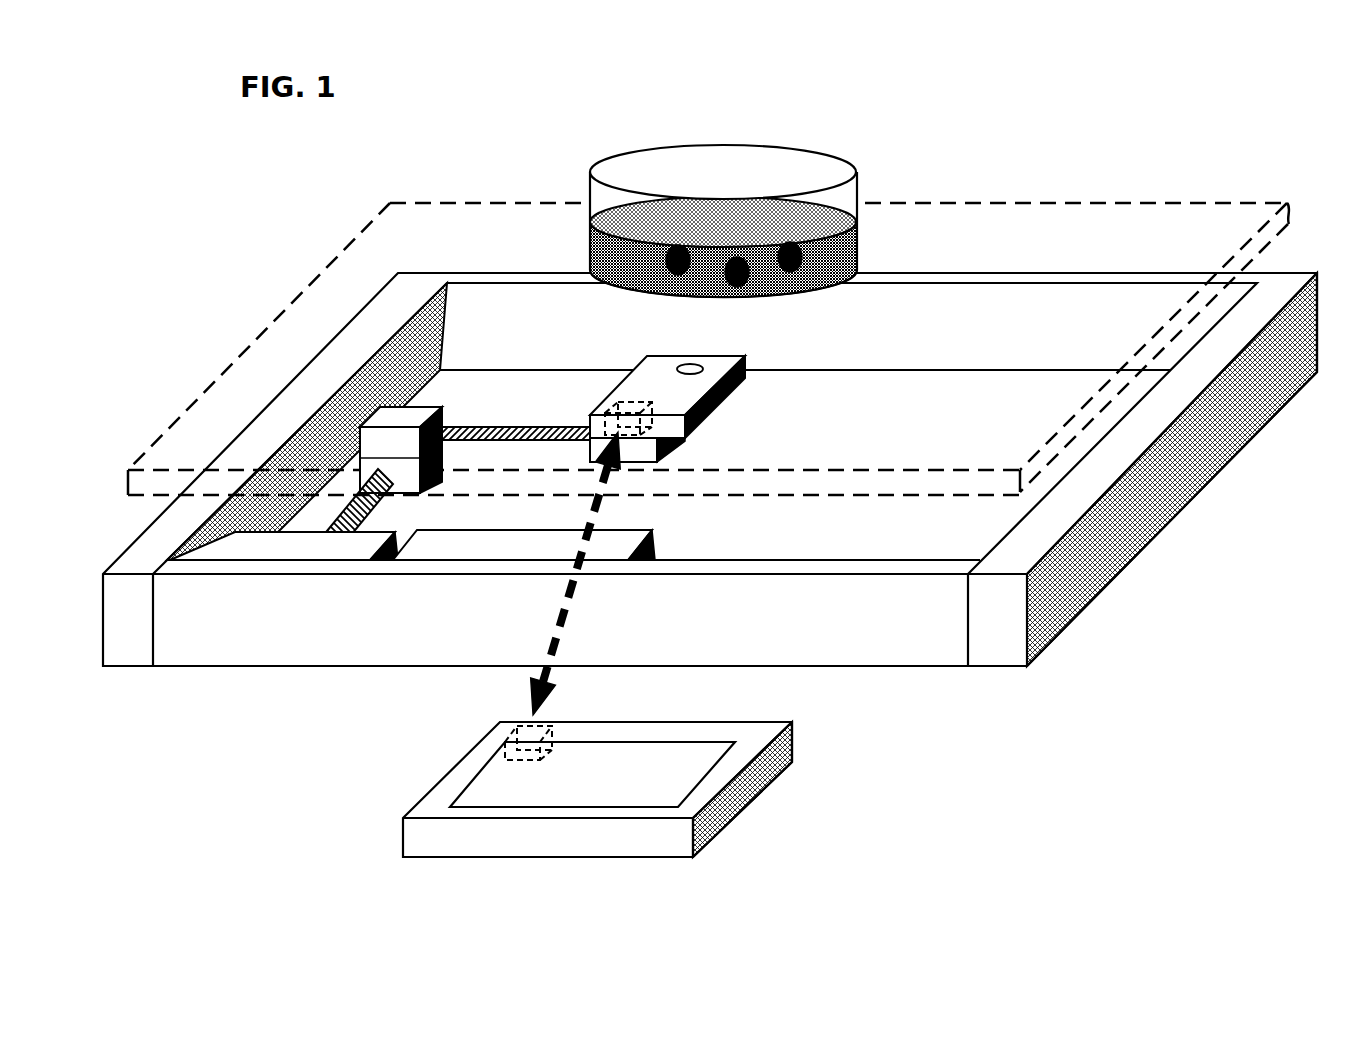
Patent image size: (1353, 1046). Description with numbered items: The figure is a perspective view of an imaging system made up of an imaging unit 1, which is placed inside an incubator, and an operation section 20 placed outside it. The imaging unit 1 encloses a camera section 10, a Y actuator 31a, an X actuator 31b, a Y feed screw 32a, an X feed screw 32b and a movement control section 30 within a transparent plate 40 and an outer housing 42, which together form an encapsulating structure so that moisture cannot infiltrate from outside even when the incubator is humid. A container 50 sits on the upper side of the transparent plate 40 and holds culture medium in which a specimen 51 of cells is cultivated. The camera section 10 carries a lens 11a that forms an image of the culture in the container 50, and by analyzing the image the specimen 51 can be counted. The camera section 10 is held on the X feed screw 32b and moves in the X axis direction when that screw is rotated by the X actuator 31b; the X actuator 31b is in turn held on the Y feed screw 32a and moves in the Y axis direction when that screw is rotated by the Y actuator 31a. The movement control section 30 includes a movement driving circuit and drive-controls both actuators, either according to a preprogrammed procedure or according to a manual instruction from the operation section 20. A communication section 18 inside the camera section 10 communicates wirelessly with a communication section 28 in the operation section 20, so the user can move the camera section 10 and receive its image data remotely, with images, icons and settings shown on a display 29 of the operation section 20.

The imaging unit 1 is at (321, 262).
The camera section 10 is at (723, 404).
The lens 11a is at (689, 363).
The communication section 18 is at (605, 410).
The operation section 20 is at (796, 755).
The communication section 28 is at (548, 722).
The display 29 is at (661, 748).
The movement control section 30 is at (500, 530).
The Y actuator 31a is at (297, 556).
The X actuator 31b is at (434, 408).
The Y feed screw 32a is at (362, 517).
The X feed screw 32b is at (510, 427).
The transparent plate 40 is at (950, 200).
The housing 42 is at (1140, 552).
The container 50 is at (672, 147).
The specimen 51 is at (588, 238).